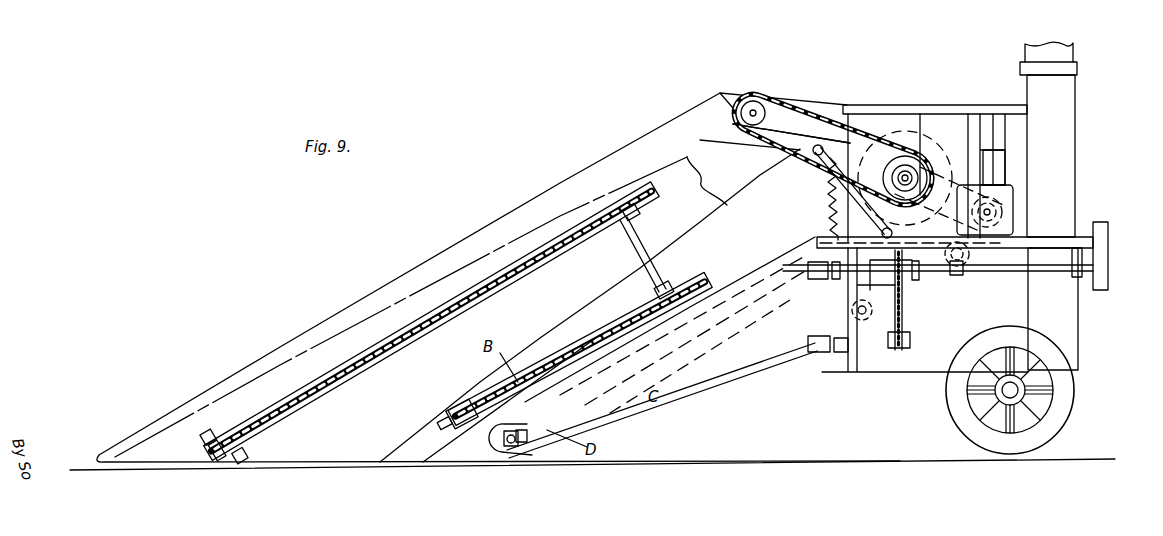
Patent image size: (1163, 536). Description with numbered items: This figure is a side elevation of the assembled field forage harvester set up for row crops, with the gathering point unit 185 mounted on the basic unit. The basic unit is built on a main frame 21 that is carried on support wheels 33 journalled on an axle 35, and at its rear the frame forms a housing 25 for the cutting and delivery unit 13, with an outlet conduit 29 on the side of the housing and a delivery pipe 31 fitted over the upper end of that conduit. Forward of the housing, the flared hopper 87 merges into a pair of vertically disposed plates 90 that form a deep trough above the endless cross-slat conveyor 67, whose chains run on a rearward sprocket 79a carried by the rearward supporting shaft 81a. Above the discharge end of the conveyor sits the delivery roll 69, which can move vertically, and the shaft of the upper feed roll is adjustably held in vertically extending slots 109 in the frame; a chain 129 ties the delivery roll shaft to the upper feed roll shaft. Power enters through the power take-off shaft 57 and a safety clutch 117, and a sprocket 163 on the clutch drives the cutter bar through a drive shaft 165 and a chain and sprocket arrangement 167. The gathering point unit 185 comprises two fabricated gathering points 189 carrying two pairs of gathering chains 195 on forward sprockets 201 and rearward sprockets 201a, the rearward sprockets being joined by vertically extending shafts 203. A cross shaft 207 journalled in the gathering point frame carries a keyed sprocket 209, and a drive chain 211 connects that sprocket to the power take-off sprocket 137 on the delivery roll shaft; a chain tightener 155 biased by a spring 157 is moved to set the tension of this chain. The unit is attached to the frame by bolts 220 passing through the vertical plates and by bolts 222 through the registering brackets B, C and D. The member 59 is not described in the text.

The gathering point unit 185 is at (344, 297).
The flared hopper 87 is at (713, 150).
The gathering points 189 is at (537, 210).
The sprockets 201 is at (223, 460).
The gathering chains 195 is at (580, 340).
The vertically extending shafts 203 is at (625, 231).
The rearward sprockets 201a is at (676, 283).
The bolts 222 is at (493, 418).
The drive shaft 165 is at (742, 398).
The endless cross-slat conveyor 67 is at (690, 330).
The cross shaft 207 is at (725, 98).
The bolts 220 is at (822, 133).
The sprocket 209 is at (757, 98).
The drive chain 211 is at (812, 108).
The vertically disposed plates 90 is at (886, 112).
The delivery roll 69 is at (912, 120).
The power take-off sprocket 137 is at (923, 163).
The chain 129 is at (977, 130).
The vertically extending slots 109 is at (990, 163).
The cutting and delivery unit 13 is at (1083, 156).
The outlet conduit 29 is at (1078, 92).
The delivery pipe 31 is at (1075, 52).
The housing 25 is at (1078, 305).
The bracket 59 is at (1099, 224).
The power take-off shaft 57 is at (1082, 268).
The main frame 21 is at (912, 370).
The sprocket 163 is at (903, 293).
The chain and sprocket arrangement 167 is at (910, 340).
The safety clutch 117 is at (870, 285).
The sprocket 79a is at (953, 266).
The rearward supporting shaft 81a is at (958, 268).
The chain tightener 155 is at (826, 184).
The spring 157 is at (830, 212).
The support wheels 33 is at (1068, 422).
The axle 35 is at (1020, 388).